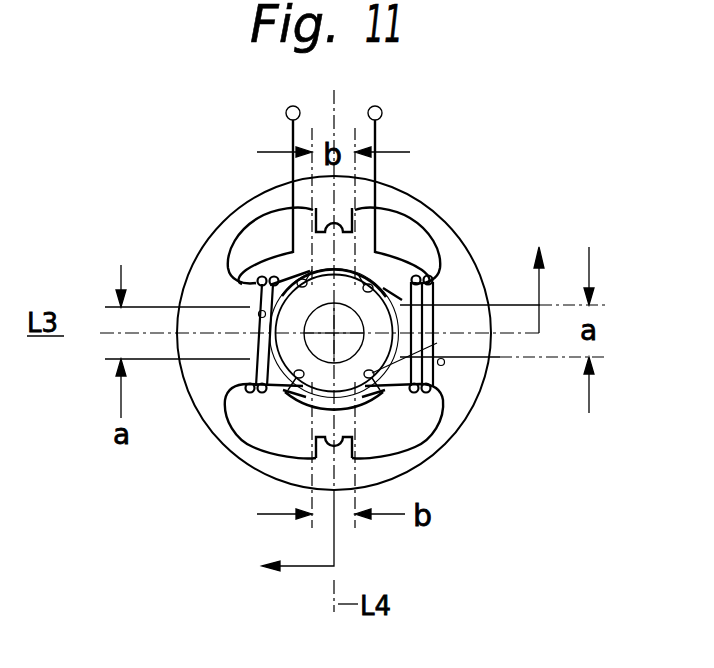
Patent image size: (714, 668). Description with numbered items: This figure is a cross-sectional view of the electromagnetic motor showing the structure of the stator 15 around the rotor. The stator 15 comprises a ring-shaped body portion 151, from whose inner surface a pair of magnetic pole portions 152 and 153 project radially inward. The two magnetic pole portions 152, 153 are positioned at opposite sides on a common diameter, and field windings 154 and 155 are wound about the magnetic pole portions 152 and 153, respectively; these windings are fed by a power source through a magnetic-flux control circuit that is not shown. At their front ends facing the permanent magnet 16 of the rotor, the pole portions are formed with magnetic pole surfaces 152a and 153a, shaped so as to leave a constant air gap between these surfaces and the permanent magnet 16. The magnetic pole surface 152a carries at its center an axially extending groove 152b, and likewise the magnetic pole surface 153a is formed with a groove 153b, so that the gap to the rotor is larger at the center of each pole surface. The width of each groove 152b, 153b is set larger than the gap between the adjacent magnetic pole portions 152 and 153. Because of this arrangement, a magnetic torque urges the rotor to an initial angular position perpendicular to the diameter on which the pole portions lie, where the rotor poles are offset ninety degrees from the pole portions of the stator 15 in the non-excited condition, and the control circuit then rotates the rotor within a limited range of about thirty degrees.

The stator 15 is at (407, 195).
The permanent magnet 16 is at (298, 378).
The ring-shaped body portion 151 is at (432, 222).
The magnetic pole portion 152 is at (262, 278).
The magnetic pole surface 152a is at (303, 270).
The groove 152b is at (262, 312).
The magnetic pole portion 153 is at (420, 294).
The magnetic pole surface 153a is at (372, 284).
The groove 153b is at (444, 366).
The field winding 154 is at (250, 387).
The field winding 155 is at (437, 343).